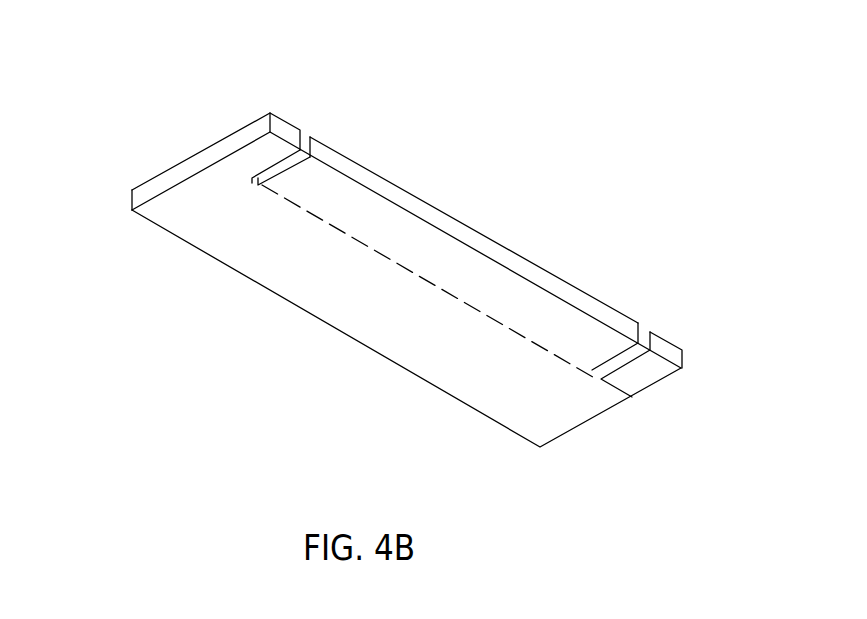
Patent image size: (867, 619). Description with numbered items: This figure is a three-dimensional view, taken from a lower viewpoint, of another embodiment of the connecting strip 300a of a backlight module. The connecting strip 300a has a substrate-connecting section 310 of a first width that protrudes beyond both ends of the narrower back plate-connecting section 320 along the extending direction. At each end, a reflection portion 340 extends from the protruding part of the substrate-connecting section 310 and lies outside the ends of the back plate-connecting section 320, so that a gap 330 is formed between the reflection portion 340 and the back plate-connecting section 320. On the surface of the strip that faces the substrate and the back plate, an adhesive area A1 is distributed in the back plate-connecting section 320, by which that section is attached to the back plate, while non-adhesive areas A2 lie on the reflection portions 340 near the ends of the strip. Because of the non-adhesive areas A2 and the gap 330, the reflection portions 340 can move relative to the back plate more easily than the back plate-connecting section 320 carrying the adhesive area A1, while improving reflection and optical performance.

The connecting strip 300a is at (156, 151).
The substrate-connecting section 310 is at (140, 197).
The back plate-connecting section 320 is at (381, 177).
The gap 330 is at (651, 329).
The reflection portion 340 is at (289, 122).
The adhesive area A1 is at (435, 262).
The non-adhesive area A2 is at (251, 158).